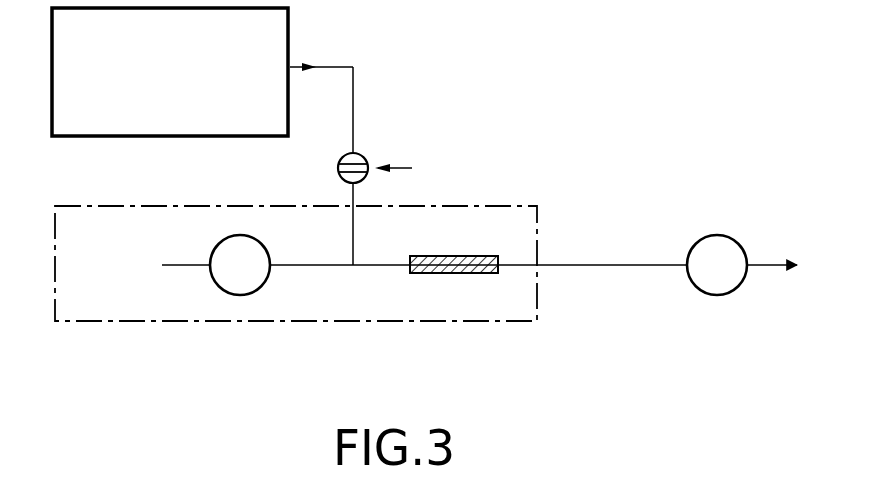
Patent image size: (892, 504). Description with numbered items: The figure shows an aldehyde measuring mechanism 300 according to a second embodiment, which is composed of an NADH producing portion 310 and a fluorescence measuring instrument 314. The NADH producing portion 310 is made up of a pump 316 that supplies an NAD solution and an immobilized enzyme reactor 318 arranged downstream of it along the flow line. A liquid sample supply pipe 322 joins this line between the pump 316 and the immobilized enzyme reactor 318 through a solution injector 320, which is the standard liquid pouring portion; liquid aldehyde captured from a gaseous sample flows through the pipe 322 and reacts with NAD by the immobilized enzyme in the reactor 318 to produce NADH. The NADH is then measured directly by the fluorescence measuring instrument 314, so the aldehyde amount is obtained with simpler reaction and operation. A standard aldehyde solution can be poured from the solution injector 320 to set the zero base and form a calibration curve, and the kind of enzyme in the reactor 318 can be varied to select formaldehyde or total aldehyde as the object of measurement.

The aldehyde measuring mechanism 300 is at (570, 142).
The NADH producing portion 310 is at (418, 322).
The fluorescence measuring instrument 314 is at (720, 295).
The pump 316 is at (259, 287).
The immobilized enzyme reactor 318 is at (430, 274).
The solution injector 320 is at (338, 160).
The liquid sample supply pipe 322 is at (353, 226).